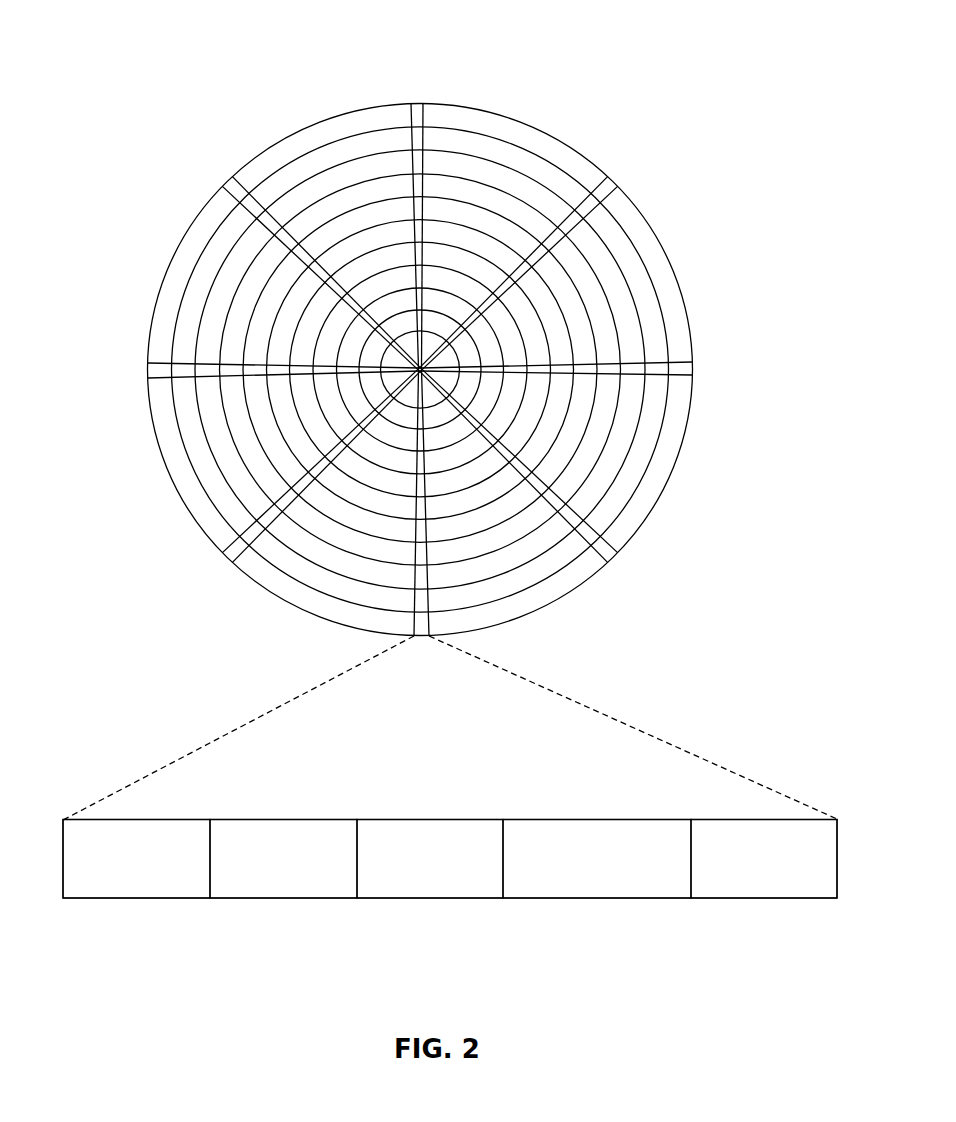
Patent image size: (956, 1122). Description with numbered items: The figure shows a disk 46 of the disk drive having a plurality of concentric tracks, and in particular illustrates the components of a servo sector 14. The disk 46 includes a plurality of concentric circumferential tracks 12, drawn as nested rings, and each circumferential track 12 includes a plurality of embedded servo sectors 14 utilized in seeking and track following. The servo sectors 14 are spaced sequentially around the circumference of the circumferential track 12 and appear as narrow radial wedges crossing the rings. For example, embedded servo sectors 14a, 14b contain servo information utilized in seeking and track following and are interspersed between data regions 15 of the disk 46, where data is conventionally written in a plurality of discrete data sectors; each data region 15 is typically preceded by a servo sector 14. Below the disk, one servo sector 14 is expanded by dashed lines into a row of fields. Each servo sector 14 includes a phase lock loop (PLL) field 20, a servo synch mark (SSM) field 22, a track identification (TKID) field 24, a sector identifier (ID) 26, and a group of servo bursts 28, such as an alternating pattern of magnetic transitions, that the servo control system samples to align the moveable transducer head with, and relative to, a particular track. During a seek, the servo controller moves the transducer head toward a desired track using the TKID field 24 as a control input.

The disk 46 is at (245, 80).
The circumferential track 12 is at (193, 265).
The servo sector 14 is at (418, 103).
The embedded servo sector 14a is at (227, 183).
The embedded servo sector 14b is at (155, 371).
The data region 15 is at (487, 145).
The phase lock loop (PLL) field 20 is at (90, 899).
The servo synch mark (SSM) field 22 is at (233, 899).
The track identification (TKID) field 24 is at (383, 899).
The sector identifier (ID) 26 is at (535, 898).
The servo bursts 28 is at (718, 898).